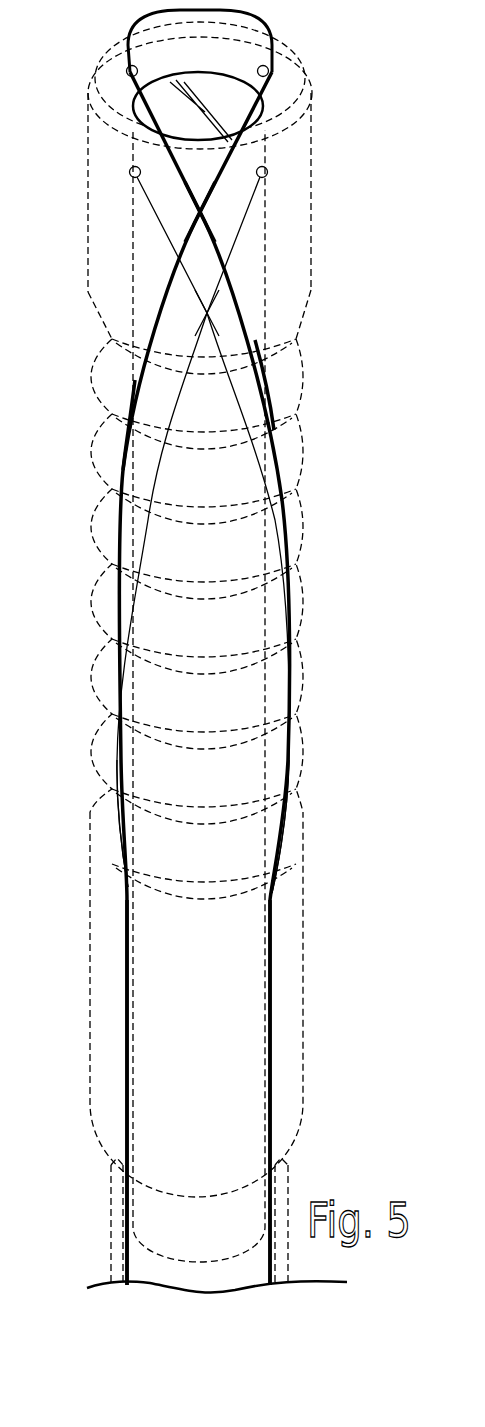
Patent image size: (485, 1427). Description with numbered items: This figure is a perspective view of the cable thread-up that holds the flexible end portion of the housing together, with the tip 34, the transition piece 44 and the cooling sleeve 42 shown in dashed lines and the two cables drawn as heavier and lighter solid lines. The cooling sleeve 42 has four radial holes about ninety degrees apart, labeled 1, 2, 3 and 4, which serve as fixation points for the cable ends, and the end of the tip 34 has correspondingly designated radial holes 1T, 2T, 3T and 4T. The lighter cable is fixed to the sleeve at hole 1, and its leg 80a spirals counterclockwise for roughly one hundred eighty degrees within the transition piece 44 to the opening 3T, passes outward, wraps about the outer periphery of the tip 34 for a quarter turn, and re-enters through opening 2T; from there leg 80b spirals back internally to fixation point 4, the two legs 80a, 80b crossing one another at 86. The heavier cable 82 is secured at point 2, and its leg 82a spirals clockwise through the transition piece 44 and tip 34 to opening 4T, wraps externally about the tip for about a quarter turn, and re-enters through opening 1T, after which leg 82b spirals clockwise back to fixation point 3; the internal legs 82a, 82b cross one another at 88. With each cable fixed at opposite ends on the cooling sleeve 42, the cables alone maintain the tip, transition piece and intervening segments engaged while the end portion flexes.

The tip 34 is at (88, 153).
The transition piece 44 is at (100, 1022).
The cooling sleeve 42 is at (115, 1187).
The cable 82 is at (165, 284).
The leg of cable 82 82a is at (123, 463).
The leg of cable 82 82b is at (263, 378).
The crossing point of legs 82a and 82b 88 is at (135, 180).
The leg of cable 80 80a is at (180, 390).
The leg of cable 80 80b is at (220, 345).
The crossing point of legs 80a and 80b 86 is at (207, 314).
The tip opening 1T is at (138, 67).
The tip opening 2T is at (130, 171).
The tip opening 3T is at (267, 176).
The tip opening 4T is at (257, 67).
The radial hole / fixation point 1 is at (125, 833).
The radial hole / fixation point 2 is at (128, 887).
The radial hole / fixation point 3 is at (272, 898).
The radial hole / fixation point 4 is at (282, 803).